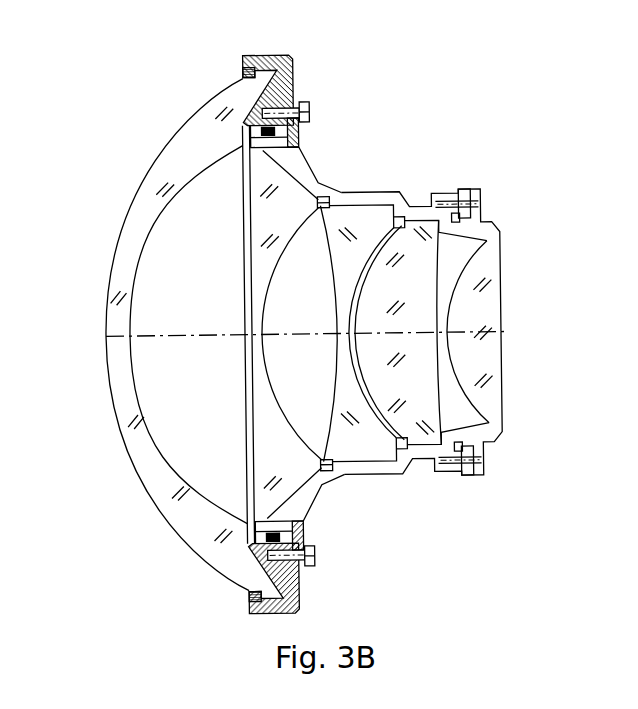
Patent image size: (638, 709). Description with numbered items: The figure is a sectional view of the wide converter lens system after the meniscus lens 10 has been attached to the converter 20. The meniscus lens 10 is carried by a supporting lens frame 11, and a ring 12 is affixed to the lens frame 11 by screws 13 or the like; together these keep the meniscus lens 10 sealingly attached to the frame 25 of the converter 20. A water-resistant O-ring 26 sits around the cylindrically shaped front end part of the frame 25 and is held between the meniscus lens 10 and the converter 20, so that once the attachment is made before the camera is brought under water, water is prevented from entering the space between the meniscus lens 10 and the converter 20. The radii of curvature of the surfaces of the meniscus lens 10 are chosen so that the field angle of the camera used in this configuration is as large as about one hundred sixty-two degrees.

The meniscus lens 10 is at (135, 198).
The supporting lens frame 11 is at (299, 62).
The ring 12 is at (302, 134).
The screws 13 is at (313, 108).
The converter 20 is at (395, 491).
The frame 25 is at (385, 193).
The water-resistant O-ring 26 is at (252, 142).